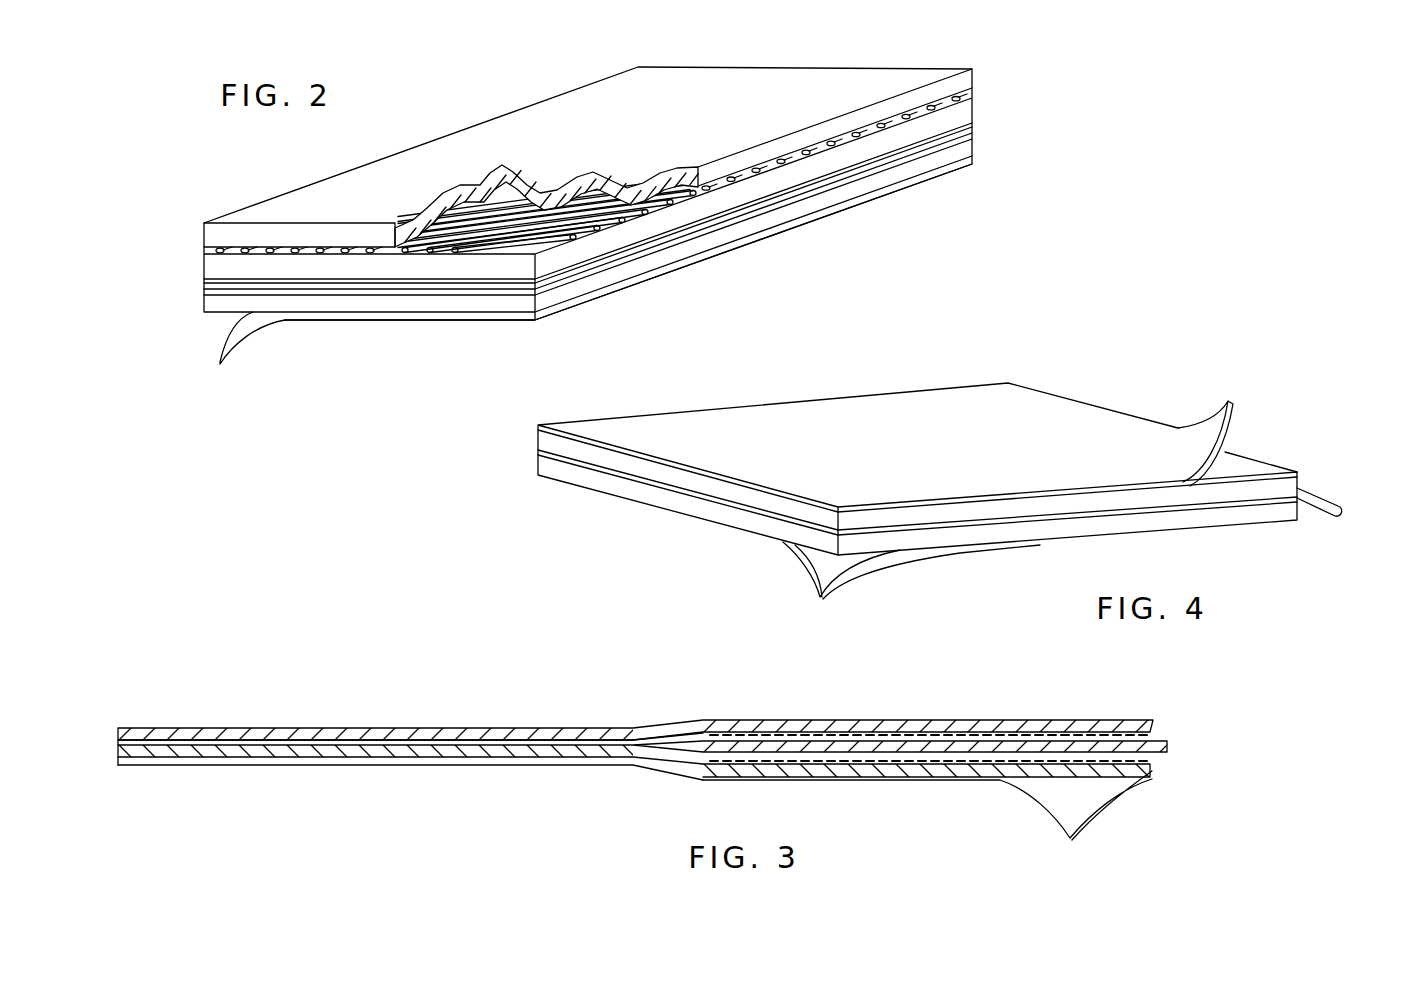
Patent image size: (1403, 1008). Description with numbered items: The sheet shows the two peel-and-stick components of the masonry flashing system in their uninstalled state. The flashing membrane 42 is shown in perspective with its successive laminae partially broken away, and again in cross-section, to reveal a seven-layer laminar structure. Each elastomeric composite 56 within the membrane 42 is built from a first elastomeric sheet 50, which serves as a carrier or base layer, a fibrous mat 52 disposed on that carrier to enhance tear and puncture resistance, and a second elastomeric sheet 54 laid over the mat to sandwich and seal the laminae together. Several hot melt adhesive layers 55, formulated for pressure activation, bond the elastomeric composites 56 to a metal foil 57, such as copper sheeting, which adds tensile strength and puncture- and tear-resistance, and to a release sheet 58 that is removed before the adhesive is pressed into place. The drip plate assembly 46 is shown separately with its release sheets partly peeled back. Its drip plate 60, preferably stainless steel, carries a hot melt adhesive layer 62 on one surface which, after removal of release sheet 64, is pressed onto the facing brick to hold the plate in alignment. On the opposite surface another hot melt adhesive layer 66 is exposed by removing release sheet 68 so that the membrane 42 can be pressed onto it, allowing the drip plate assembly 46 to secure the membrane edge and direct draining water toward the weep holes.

In FIG. 2, the peel-and-stick flashing membrane 42 is at (440, 138).
In FIG. 4, the drip plate assembly 46 is at (1241, 456).
In FIG. 2, the first elastomeric sheet 50 is at (962, 110).
In FIG. 3, the first elastomeric sheet 50 is at (393, 736).
In FIG. 2, the fibrous mat 52 is at (470, 254).
In FIG. 3, the fibrous mat 52 is at (926, 726).
In FIG. 2, the second elastomeric sheet 54 is at (205, 232).
In FIG. 4, the second elastomeric sheet 54 is at (537, 452).
In FIG. 3, the second elastomeric sheet 54 is at (410, 736).
In FIG. 2, the hot melt adhesive layers 55 is at (213, 316).
In FIG. 3, the hot melt adhesive layers 55 is at (1135, 738).
In FIG. 2, the elastomeric composites 56 is at (333, 306).
In FIG. 3, the elastomeric composites 56 is at (369, 760).
In FIG. 2, the metal foil 57 is at (972, 131).
In FIG. 3, the metal foil 57 is at (1163, 755).
In FIG. 2, the release sheet 58 is at (502, 322).
In FIG. 3, the release sheet 58 is at (1078, 805).
In FIG. 4, the drip plate 60 is at (1344, 494).
In FIG. 4, the hot melt adhesive layer 62 is at (633, 486).
In FIG. 4, the release sheet 64 is at (808, 575).
In FIG. 4, the hot melt adhesive layer 66 is at (1262, 470).
In FIG. 4, the release sheet 68 is at (937, 405).